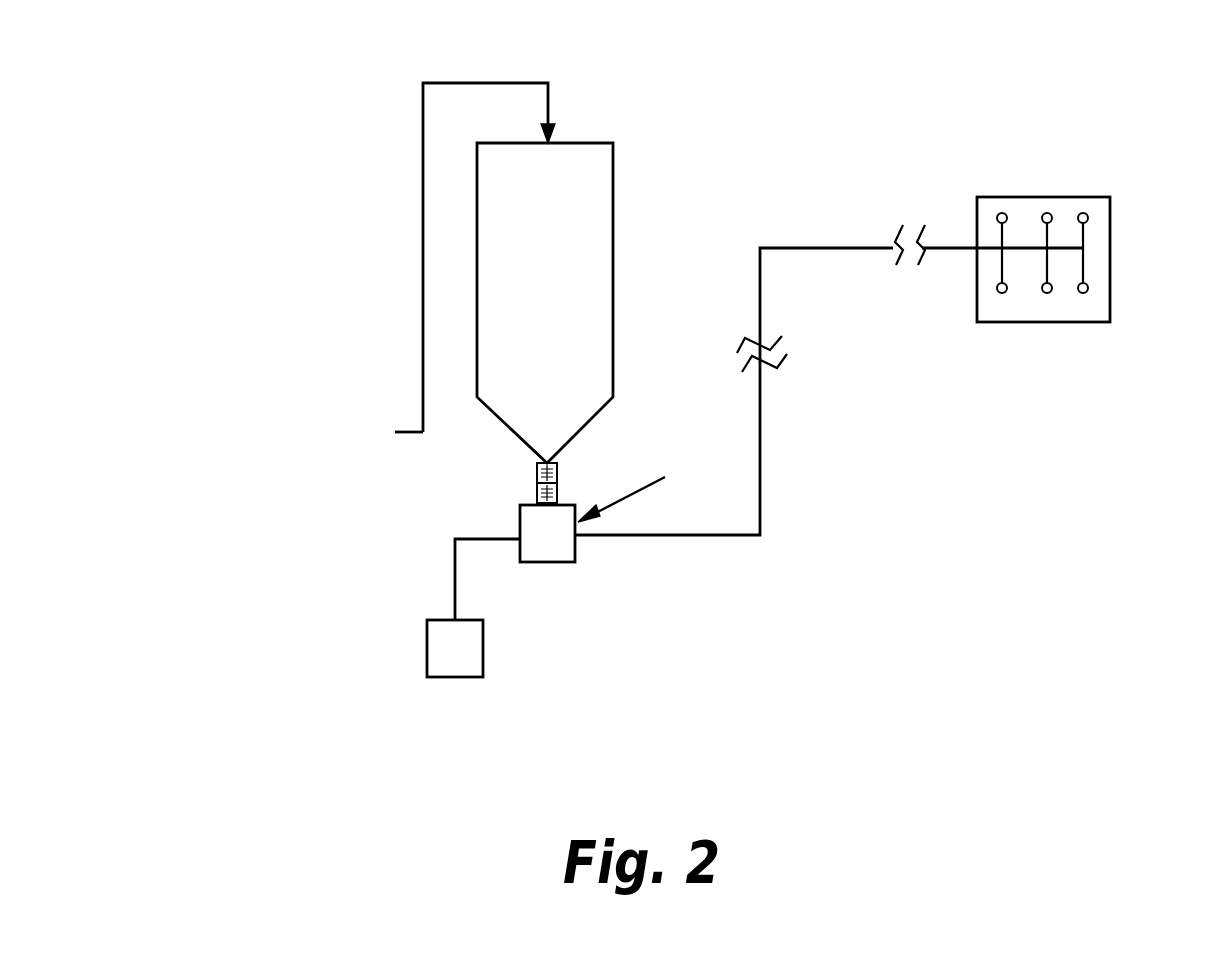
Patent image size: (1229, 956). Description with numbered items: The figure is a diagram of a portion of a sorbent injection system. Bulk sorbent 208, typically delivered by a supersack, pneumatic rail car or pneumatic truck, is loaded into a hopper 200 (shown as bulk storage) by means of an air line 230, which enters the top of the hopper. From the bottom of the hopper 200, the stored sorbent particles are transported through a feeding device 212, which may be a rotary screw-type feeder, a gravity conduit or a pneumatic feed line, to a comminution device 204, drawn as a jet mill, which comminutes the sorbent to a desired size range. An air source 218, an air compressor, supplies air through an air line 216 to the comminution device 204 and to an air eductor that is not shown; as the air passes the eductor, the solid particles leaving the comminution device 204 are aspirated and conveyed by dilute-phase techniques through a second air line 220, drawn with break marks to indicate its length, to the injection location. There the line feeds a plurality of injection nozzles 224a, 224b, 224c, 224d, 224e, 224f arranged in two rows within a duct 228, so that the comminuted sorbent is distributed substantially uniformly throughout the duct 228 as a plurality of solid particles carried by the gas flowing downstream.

The hopper 200 is at (613, 163).
The comminution device 204 is at (575, 562).
The sorbent 208 is at (243, 373).
The device 212 is at (538, 472).
The air line 216 is at (455, 532).
The air source 218 is at (483, 657).
The air line 220 is at (760, 443).
The injection nozzle 224a is at (1000, 212).
The injection nozzle 224b is at (1047, 212).
The injection nozzle 224c is at (1083, 212).
The injection nozzle 224d is at (1000, 292).
The injection nozzle 224e is at (1047, 293).
The injection nozzle 224f is at (1085, 292).
The duct 228 is at (1110, 222).
The air line 230 is at (435, 83).